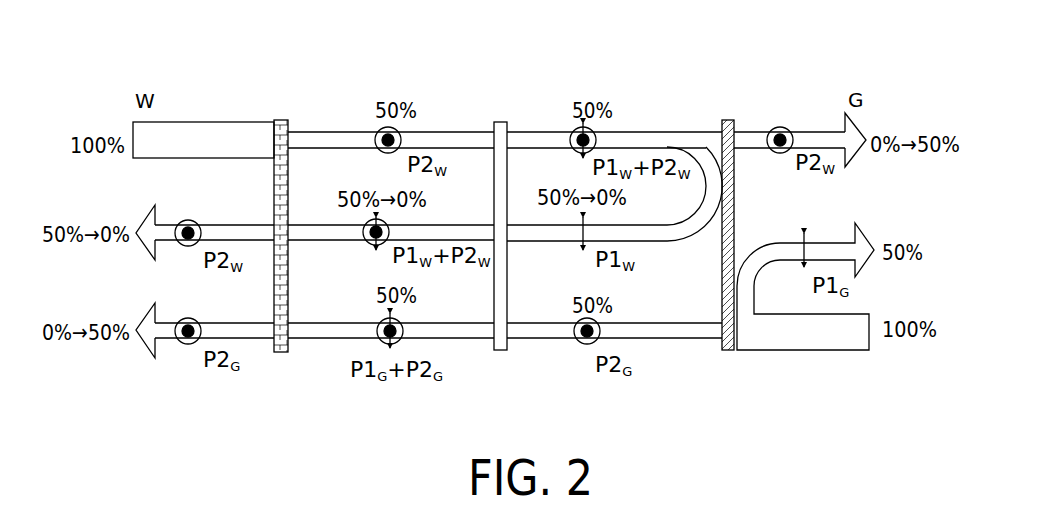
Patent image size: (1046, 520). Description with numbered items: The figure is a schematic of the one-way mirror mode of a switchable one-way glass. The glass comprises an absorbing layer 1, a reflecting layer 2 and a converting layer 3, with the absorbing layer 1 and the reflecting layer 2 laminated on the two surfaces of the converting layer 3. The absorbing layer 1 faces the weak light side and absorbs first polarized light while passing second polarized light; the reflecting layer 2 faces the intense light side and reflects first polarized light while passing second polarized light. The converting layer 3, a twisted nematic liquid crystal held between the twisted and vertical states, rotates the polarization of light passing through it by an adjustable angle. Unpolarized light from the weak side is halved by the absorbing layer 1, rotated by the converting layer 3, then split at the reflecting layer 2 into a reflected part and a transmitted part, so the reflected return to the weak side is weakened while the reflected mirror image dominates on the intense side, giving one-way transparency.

The absorbing layer 1 is at (283, 120).
The reflecting layer 2 is at (727, 120).
The converting layer 3 is at (500, 120).